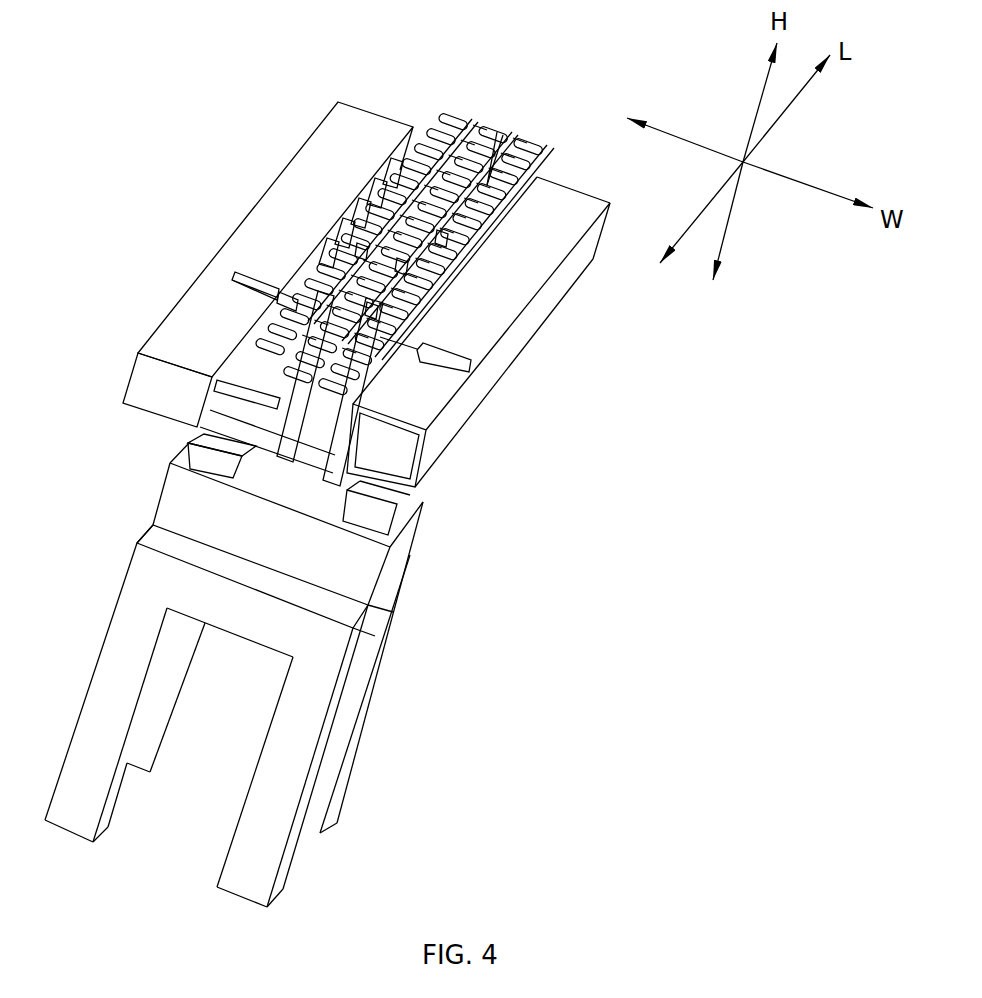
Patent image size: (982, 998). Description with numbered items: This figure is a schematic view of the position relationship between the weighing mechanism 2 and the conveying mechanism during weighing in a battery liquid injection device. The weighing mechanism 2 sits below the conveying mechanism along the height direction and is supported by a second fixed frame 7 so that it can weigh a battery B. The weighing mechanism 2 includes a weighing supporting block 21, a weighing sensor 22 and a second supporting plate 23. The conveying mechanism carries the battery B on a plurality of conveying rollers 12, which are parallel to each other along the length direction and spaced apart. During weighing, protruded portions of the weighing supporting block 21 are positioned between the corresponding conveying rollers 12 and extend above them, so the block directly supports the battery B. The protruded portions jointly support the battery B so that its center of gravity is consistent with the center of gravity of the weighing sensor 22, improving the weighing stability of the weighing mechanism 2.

The weighing mechanism 2 is at (50, 335).
The weighing supporting block 21 is at (273, 376).
The weighing sensor 22 is at (247, 437).
The second supporting plate 23 is at (192, 498).
The second fixed frame 7 is at (303, 730).
The conveying rollers 12 is at (253, 340).
The battery B is at (347, 270).